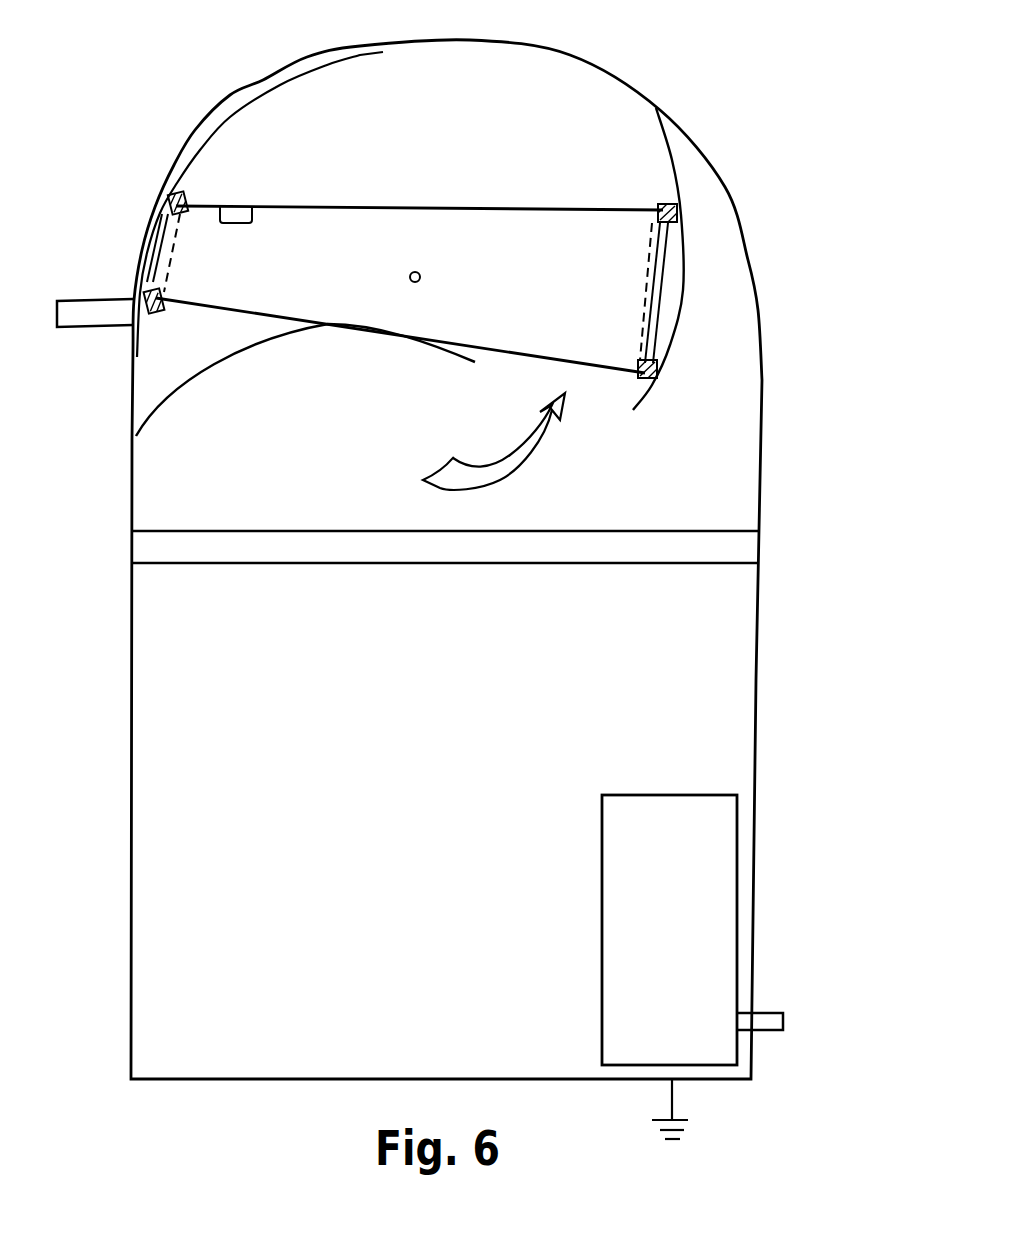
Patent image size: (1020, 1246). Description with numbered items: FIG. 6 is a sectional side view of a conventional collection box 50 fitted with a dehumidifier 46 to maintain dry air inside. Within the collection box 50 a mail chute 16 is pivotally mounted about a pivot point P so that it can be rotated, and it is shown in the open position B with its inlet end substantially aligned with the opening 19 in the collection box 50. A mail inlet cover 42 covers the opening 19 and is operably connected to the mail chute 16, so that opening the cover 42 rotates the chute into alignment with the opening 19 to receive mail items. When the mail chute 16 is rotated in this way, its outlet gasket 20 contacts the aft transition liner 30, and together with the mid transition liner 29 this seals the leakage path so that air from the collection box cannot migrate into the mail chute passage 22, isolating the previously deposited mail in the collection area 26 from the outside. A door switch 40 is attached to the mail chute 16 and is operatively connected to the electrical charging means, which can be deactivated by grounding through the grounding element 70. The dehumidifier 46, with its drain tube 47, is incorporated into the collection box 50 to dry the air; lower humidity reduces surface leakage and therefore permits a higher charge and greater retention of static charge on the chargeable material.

The mail chute 16 is at (399, 203).
The opening 19 is at (150, 227).
The outlet gasket 20 is at (660, 210).
The mail chute passage 22 is at (407, 252).
The collection box collection area 26 is at (348, 686).
The mid transition liner 29 is at (210, 350).
The aft transition liner 30 is at (668, 148).
The door switch 40 is at (232, 208).
The mail inlet cover 42 is at (87, 298).
The dehumidifier 46 is at (620, 872).
The drain tube 47 is at (784, 1011).
The collection box 50 is at (550, 53).
The grounding element 70 is at (677, 1120).
The open position B is at (317, 207).
The pivot point P is at (409, 275).